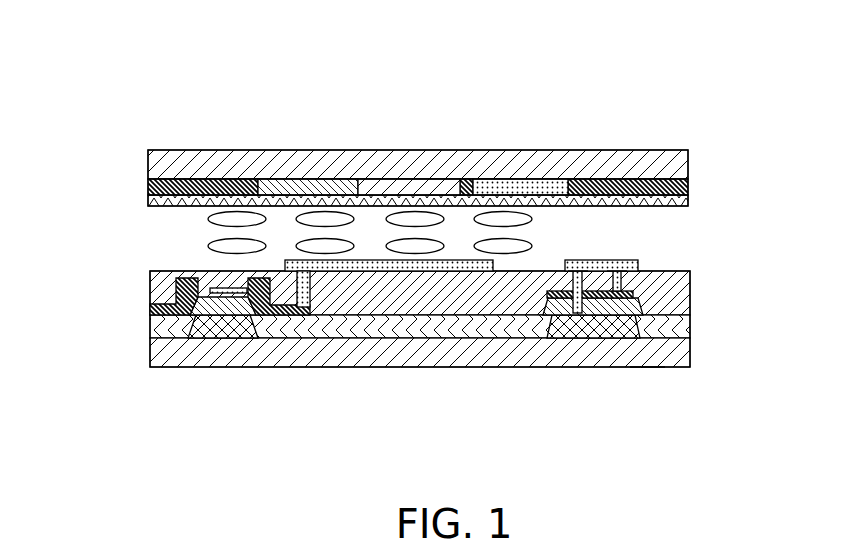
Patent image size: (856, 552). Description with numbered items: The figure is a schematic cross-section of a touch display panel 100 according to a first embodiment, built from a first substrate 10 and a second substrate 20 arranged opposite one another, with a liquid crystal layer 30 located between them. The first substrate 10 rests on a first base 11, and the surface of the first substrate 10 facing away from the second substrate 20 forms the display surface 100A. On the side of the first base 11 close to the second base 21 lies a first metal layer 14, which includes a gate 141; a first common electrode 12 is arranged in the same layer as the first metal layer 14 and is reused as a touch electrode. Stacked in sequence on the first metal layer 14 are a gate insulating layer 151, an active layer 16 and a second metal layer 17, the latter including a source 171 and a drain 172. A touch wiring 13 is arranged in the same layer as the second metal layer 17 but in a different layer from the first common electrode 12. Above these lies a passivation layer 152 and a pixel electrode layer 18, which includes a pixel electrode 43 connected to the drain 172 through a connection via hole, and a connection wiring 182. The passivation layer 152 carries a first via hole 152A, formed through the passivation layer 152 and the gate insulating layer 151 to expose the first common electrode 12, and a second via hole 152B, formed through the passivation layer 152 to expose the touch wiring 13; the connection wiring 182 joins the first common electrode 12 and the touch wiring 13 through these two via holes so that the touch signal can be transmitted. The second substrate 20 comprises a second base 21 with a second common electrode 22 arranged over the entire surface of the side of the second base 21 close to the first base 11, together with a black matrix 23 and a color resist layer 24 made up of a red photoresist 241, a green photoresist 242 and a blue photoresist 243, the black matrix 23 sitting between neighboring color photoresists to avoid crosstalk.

The touch display panel 100 is at (212, 60).
The display surface 100A is at (646, 372).
The first substrate 10 is at (464, 340).
The first base 11 is at (690, 353).
The first common electrode 12 is at (598, 333).
The touch wiring 13 is at (613, 295).
The first metal layer 14 is at (219, 365).
The gate 141 is at (238, 332).
The gate insulating layer 151 is at (690, 324).
The passivation layer 152 is at (690, 272).
The first via hole 152A is at (577, 268).
The second via hole 152B is at (619, 268).
The active layer 16 is at (214, 290).
The second metal layer 17 is at (208, 347).
The source 171 is at (182, 300).
The drain 172 is at (290, 312).
The pixel electrode layer 18 is at (461, 361).
The connection wiring 182 is at (567, 264).
The pixel electrode 43 is at (304, 292).
The second substrate 20 is at (484, 130).
The second base 21 is at (690, 157).
The second common electrode 22 is at (690, 201).
The black matrix 23 is at (458, 122).
The color resist layer 24 is at (413, 122).
The red photoresist 241 is at (352, 186).
The green photoresist 242 is at (413, 186).
The blue photoresist 243 is at (513, 149).
The liquid crystal layer 30 is at (207, 246).